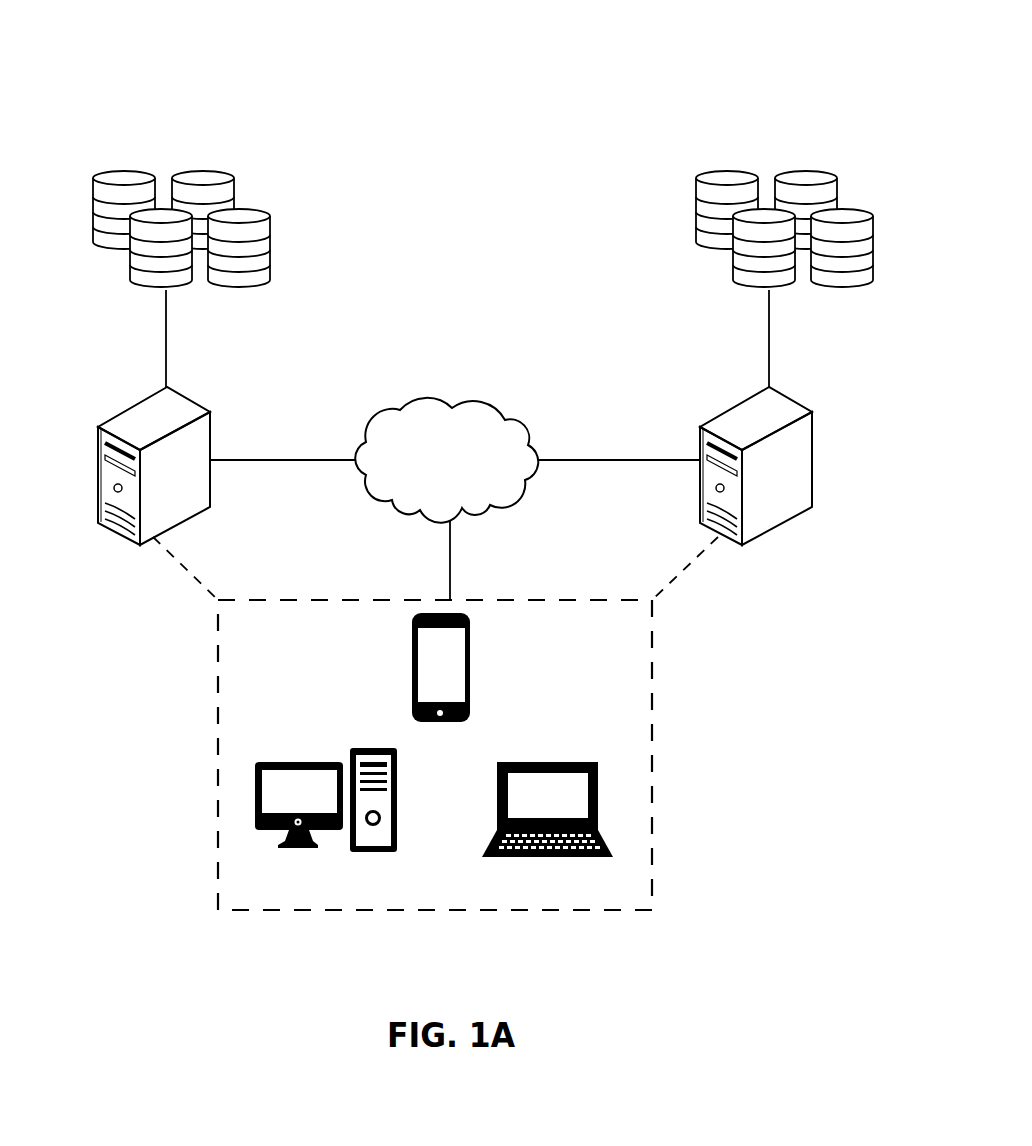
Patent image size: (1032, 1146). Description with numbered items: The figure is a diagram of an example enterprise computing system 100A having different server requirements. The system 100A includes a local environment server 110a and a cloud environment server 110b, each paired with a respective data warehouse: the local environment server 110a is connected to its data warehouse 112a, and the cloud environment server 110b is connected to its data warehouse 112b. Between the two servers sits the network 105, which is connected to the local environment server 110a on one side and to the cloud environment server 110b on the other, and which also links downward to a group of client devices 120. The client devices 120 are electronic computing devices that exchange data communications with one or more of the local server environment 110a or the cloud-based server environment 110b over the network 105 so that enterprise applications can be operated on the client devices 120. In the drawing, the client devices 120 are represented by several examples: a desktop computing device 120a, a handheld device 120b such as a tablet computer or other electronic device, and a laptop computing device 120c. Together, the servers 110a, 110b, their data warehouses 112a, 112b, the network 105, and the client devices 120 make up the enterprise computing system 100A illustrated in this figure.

The system 100A is at (844, 65).
The network 105 is at (418, 402).
The local environment server 110a is at (100, 426).
The cloud environment server 110b is at (702, 426).
The data warehouse 112a is at (119, 172).
The data warehouse 112b is at (722, 170).
The client devices 120 is at (218, 748).
The desktop computing device 120a is at (287, 763).
The tablet computer or other electronic device 120b is at (407, 683).
The laptop computing device 120c is at (570, 763).